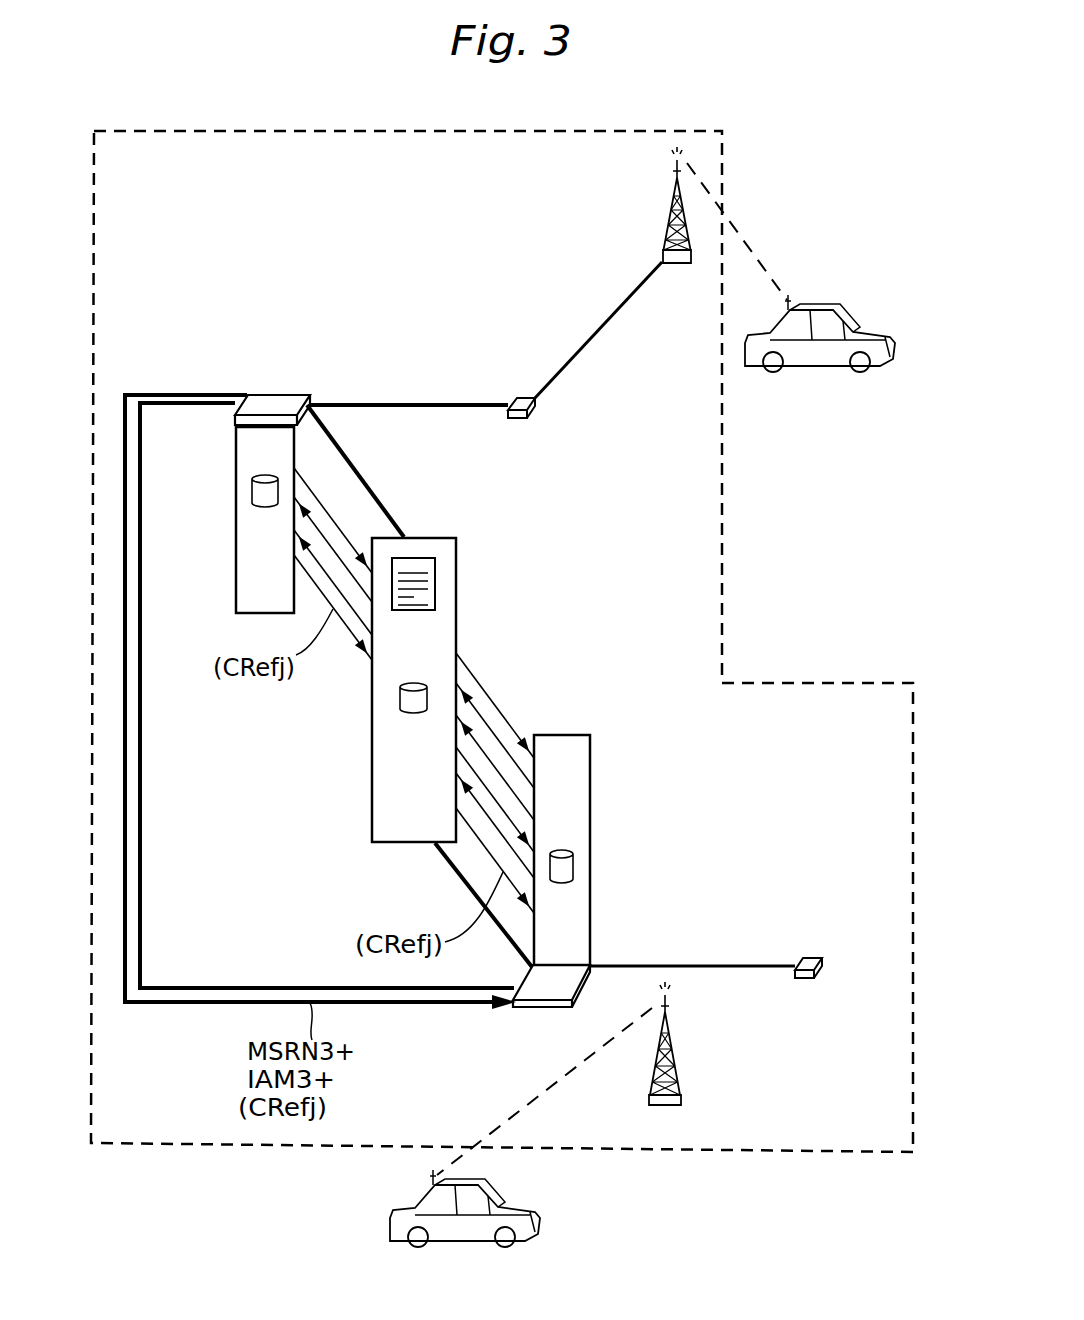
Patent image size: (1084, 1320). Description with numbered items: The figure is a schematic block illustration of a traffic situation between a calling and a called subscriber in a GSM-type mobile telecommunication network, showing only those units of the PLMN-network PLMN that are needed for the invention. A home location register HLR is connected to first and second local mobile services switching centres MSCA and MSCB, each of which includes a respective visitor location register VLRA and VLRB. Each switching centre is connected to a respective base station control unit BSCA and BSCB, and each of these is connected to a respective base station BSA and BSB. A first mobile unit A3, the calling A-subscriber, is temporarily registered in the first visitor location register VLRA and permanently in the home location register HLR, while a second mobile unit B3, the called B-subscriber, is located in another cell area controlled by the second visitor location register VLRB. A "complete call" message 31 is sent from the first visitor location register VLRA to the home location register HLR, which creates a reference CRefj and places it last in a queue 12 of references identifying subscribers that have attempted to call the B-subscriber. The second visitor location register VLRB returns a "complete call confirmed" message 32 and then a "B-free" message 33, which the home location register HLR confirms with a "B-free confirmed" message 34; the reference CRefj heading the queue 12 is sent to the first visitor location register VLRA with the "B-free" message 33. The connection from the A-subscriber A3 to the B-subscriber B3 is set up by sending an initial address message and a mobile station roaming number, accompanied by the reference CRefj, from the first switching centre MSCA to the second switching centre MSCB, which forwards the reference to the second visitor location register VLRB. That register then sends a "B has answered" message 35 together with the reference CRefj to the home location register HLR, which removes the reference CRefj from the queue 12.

The queue 12 is at (435, 565).
The "complete call" message 31 is at (313, 490).
The "complete call confirmed" message 32 is at (318, 524).
The "B-free" message 33 is at (328, 572).
The "B-free confirmed" message 34 is at (493, 798).
The "B has answered" message 35 is at (502, 836).
The first local mobile services switching centre MSCA is at (273, 393).
The second local mobile services switching centre MSCB is at (540, 1008).
The first visitor location register VLRA is at (236, 500).
The second visitor location register VLRB is at (590, 858).
The home location register HLR is at (372, 722).
The first base station control unit BSCA is at (520, 397).
The second base station control unit BSCB is at (810, 958).
The first base station BSA is at (662, 257).
The second base station BSB is at (680, 1097).
The first mobile unit A3 is at (895, 345).
The second mobile unit B3 is at (390, 1224).
The PLMN-network PLMN is at (804, 681).
The reference CRefj is at (430, 595).